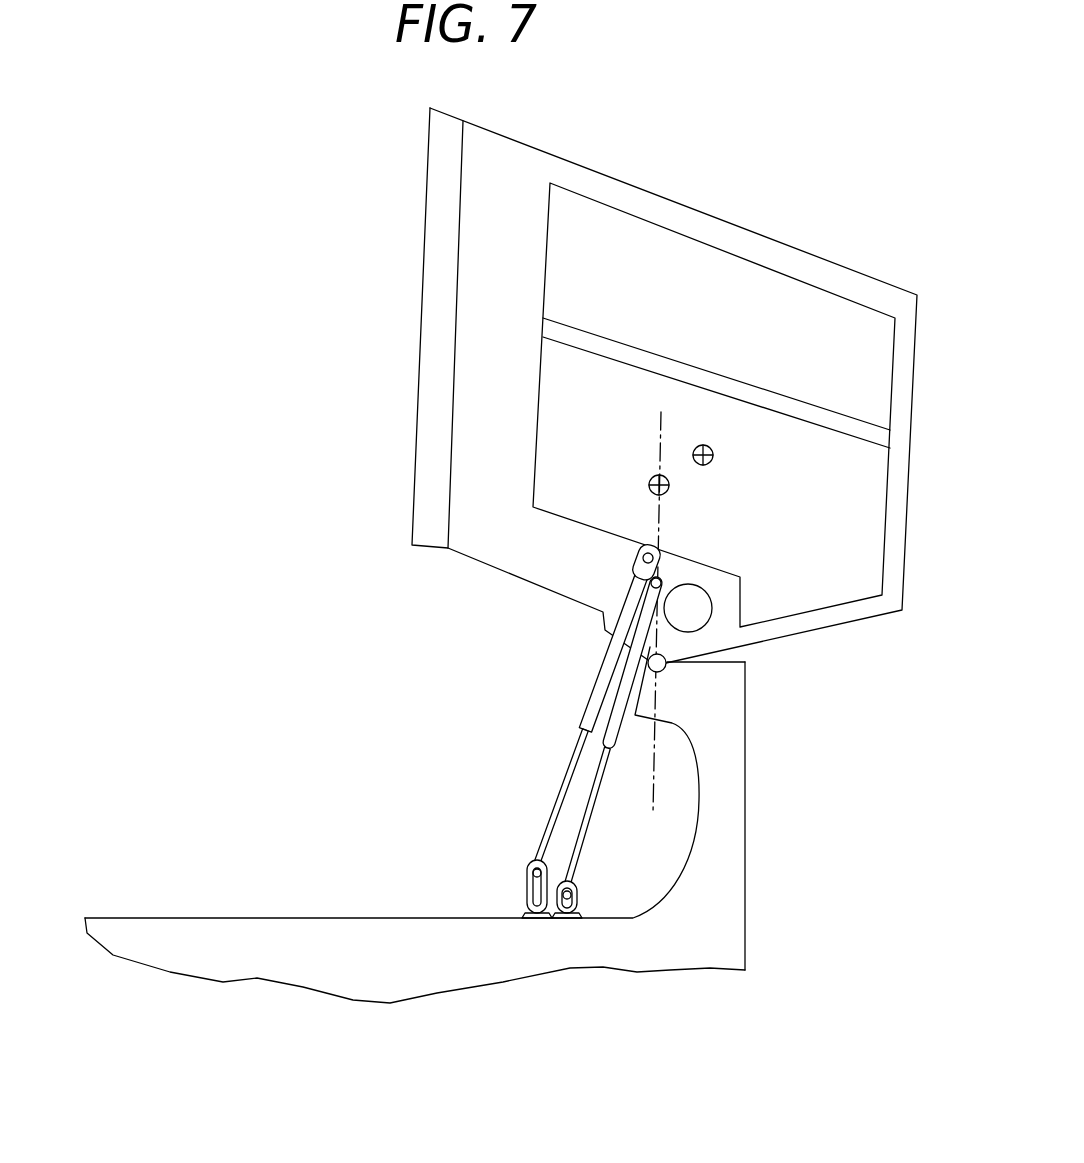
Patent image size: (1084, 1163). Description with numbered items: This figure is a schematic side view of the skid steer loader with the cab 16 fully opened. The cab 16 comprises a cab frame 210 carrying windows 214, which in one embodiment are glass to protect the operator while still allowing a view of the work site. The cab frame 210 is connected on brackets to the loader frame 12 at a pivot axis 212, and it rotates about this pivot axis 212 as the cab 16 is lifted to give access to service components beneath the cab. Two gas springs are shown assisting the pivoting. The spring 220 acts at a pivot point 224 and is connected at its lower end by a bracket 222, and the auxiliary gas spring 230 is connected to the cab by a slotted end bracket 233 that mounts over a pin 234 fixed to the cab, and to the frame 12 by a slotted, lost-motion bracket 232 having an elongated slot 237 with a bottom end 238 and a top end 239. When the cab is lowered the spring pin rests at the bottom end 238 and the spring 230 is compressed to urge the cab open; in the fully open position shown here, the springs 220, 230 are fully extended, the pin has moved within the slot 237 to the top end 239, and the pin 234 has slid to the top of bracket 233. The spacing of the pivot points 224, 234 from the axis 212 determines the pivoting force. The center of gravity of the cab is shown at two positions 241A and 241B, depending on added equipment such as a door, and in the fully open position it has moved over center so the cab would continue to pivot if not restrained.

The frame 12 is at (620, 952).
The cab 16 is at (601, 460).
The cab frame 210 is at (793, 635).
The pivot axis 212 is at (667, 667).
The windows 214 is at (560, 368).
The spring 220 is at (667, 722).
The lower bracket of second gas spring 222 is at (575, 903).
The pivot point 224 is at (662, 580).
The auxiliary gas spring 230 is at (550, 683).
The bracket 232 is at (473, 844).
The slotted end bracket 233 is at (636, 556).
The pin 234 is at (648, 552).
The elongated slot 237 is at (533, 897).
The bottom end of slot 238 is at (537, 918).
The top end of slot 239 is at (537, 866).
The center of gravity position 241A is at (712, 446).
The center of gravity position 241B is at (670, 482).